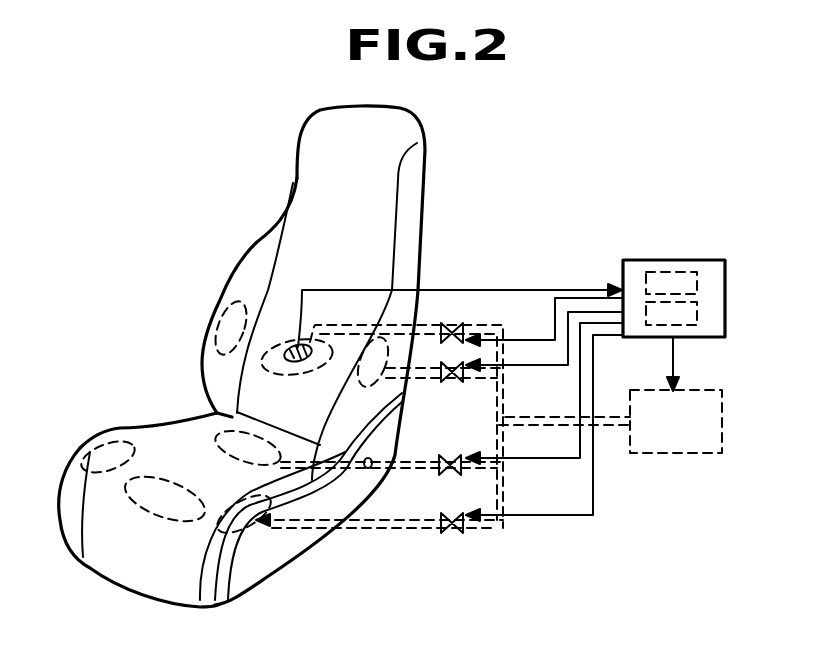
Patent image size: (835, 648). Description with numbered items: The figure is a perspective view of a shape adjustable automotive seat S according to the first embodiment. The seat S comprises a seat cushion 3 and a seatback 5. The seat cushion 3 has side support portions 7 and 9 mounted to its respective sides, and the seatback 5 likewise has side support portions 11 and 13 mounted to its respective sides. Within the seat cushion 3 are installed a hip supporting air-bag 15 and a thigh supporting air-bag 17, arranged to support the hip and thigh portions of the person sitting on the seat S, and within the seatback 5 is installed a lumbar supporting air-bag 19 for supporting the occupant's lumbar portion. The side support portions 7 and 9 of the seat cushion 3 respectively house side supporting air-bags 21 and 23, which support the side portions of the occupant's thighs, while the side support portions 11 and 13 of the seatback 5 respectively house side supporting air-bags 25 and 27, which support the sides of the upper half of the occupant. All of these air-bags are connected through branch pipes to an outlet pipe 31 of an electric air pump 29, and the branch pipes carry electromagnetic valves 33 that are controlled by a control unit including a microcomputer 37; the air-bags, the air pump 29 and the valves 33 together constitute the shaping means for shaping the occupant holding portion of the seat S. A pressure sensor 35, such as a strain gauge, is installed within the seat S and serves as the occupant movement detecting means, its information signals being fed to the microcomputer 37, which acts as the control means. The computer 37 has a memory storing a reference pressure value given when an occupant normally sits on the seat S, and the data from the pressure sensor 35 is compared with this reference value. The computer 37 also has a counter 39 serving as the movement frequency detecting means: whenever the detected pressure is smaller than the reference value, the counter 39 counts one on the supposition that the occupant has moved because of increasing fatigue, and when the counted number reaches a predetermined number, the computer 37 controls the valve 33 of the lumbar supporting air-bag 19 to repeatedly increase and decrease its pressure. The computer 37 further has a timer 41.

The automotive seat S is at (235, 221).
The seat cushion 3 is at (183, 457).
The seatback 5 is at (366, 209).
The side support portion 7 is at (84, 448).
The side support portion 9 is at (212, 558).
The side support portion 11 is at (247, 276).
The side support portion 13 is at (418, 259).
The hip supporting air-bag 15 is at (233, 459).
The thigh supporting air-bag 17 is at (143, 512).
The lumbar supporting air-bag 19 is at (280, 366).
The side supporting air-bag 21 is at (107, 442).
The side supporting air-bag 23 is at (280, 550).
The side supporting air-bag 25 is at (217, 316).
The side supporting air-bag 27 is at (376, 386).
The electric air pump 29 is at (722, 415).
The outlet pipe 31 is at (543, 428).
The electromagnetic valve 33 is at (463, 323).
The pressure sensor 35 is at (297, 298).
The microcomputer 37 is at (668, 260).
The counter 39 is at (697, 292).
The timer 41 is at (697, 320).